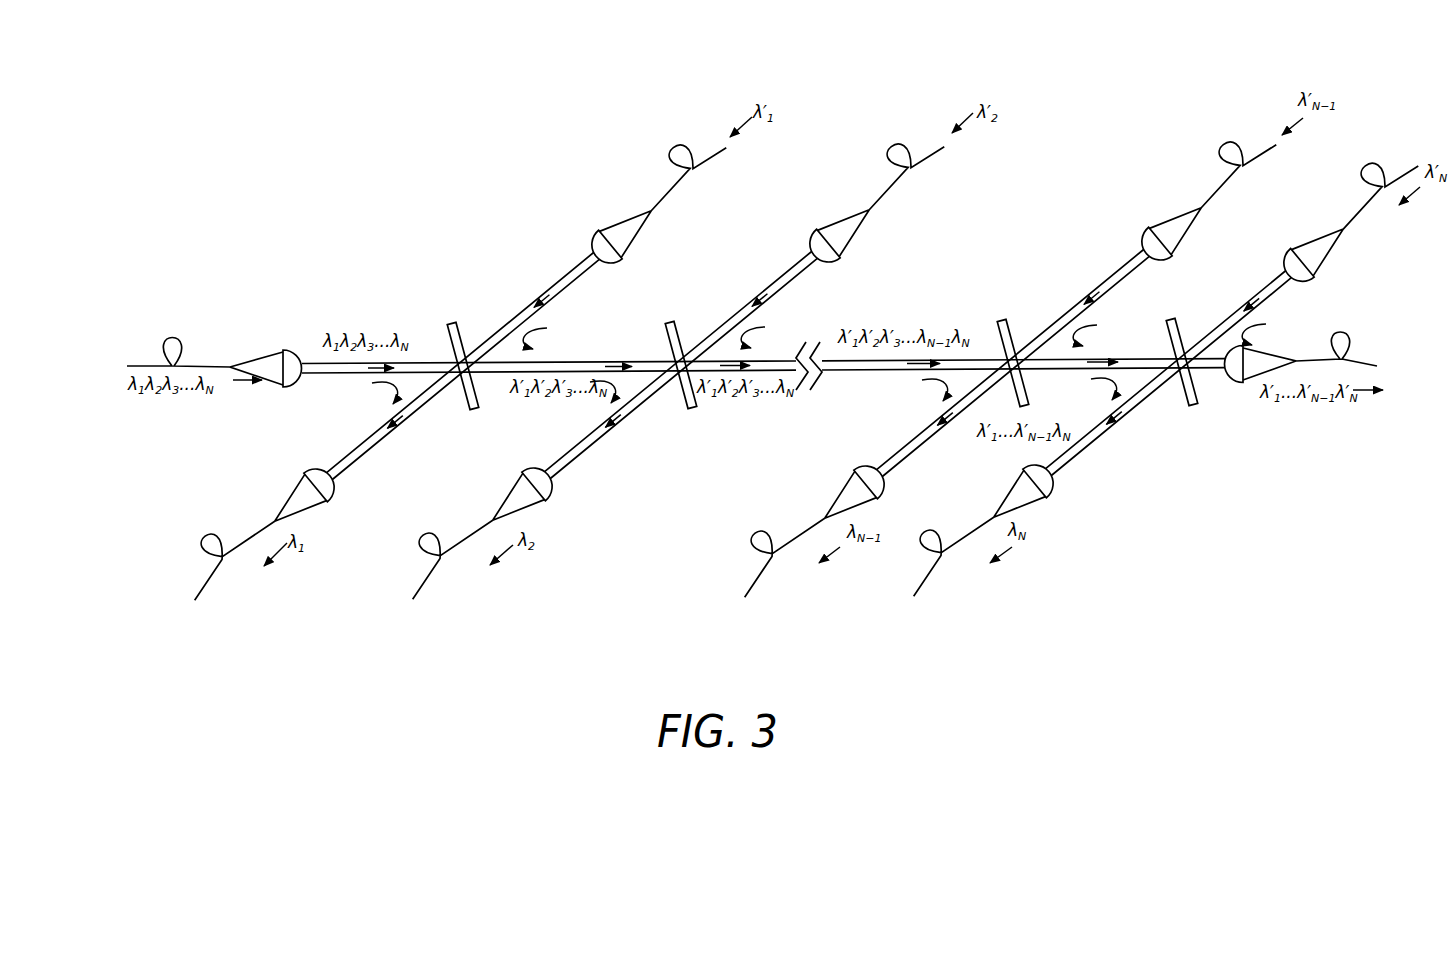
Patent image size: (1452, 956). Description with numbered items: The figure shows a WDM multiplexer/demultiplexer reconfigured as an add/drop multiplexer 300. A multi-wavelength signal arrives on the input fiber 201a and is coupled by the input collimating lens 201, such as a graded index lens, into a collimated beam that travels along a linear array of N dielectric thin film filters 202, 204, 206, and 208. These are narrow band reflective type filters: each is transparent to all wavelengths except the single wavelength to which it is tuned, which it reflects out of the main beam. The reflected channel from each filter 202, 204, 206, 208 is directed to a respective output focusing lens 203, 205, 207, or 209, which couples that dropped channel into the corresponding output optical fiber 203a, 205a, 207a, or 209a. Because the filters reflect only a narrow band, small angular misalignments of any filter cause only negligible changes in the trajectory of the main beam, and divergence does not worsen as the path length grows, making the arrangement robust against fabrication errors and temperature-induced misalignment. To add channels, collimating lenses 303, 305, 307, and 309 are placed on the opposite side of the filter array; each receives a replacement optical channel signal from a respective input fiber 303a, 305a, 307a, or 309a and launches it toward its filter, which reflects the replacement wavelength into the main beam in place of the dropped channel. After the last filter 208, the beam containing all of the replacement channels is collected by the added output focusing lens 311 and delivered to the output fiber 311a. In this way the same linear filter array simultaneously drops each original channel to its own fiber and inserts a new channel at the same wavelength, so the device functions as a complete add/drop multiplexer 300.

The optical add/drop multiplexer system 300 is at (445, 147).
The input collimating lens 201 is at (283, 350).
The input fiber 201a is at (162, 337).
The dielectric thin film filter 202 is at (450, 323).
The output focusing lens 203 is at (306, 470).
The output optical fiber 203a is at (206, 540).
The dielectric thin film filter 204 is at (673, 322).
The output focusing lens 205 is at (522, 467).
The output optical fiber 205a is at (426, 541).
The dielectric thin film filter 206 is at (1002, 320).
The output focusing lens 207 is at (857, 467).
The output optical fiber 207a is at (756, 539).
The dielectric thin film filter 208 is at (1172, 320).
The output focusing lens 209 is at (1050, 492).
The output optical fiber 209a is at (942, 565).
The collimating lens 303 is at (596, 233).
The input fiber 303a is at (674, 148).
The collimating lens 305 is at (814, 231).
The input fiber 305a is at (894, 148).
The collimating lens 307 is at (1146, 231).
The input fiber 307a is at (1226, 145).
The collimating lens 309 is at (1290, 252).
The input fiber 309a is at (1370, 166).
The output focusing lens 311 is at (1233, 386).
The output fiber 311a is at (1348, 333).